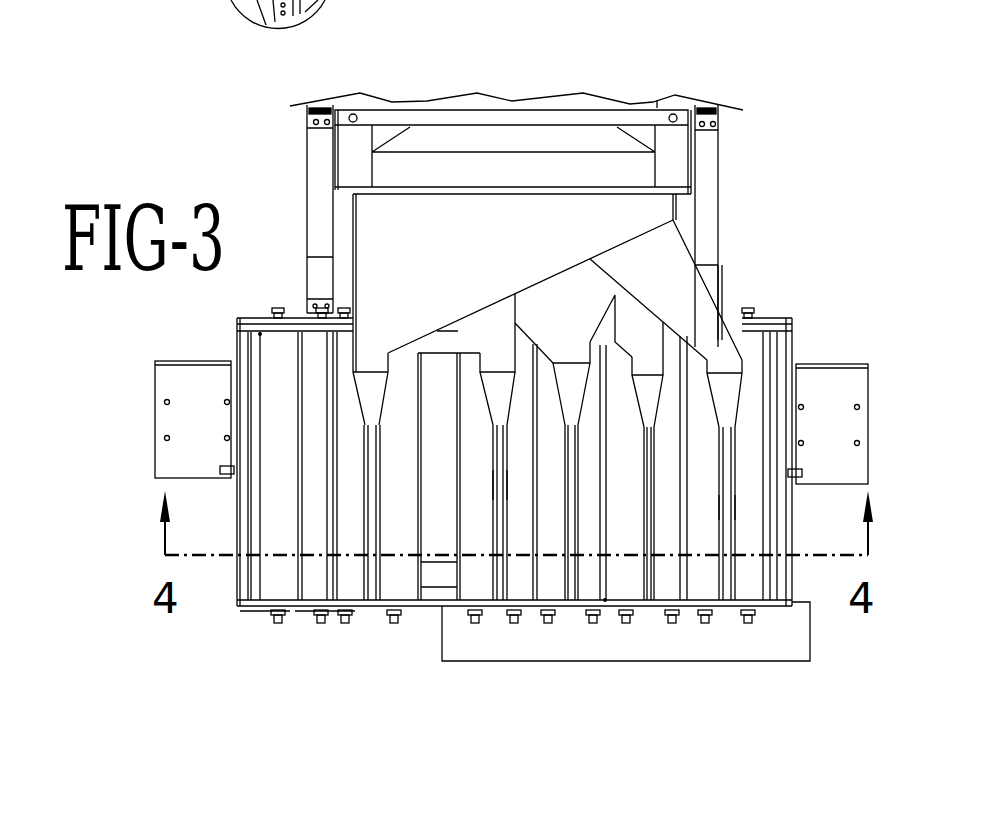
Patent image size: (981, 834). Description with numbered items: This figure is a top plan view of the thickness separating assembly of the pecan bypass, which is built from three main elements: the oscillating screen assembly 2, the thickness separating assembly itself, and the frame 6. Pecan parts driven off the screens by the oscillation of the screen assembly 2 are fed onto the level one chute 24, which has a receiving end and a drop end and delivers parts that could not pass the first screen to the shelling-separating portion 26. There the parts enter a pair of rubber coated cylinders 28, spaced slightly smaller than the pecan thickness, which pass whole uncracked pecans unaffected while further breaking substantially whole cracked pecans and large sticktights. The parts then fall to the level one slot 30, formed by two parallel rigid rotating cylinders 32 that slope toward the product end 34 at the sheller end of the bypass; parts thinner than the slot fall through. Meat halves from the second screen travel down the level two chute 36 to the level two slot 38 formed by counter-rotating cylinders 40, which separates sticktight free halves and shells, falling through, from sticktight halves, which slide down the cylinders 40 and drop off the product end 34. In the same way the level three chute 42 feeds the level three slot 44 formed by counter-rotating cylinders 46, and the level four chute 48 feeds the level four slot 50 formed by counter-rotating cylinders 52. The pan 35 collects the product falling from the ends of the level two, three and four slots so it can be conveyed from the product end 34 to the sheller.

The screen assembly 2 is at (618, 78).
The frame 6 is at (828, 345).
The level one chute 24 is at (364, 373).
The shelling-separating portion 26 is at (360, 643).
The rubber coated cylinders 28 is at (357, 479).
The level one slot 30 is at (301, 453).
The rotating cylinders 32 is at (277, 393).
The product end 34 is at (198, 622).
The pan 35 is at (730, 673).
The level two chute 36 is at (497, 392).
The level two slot 38 is at (497, 485).
The counter-rotating cylinders 40 is at (487, 487).
The level three chute 42 is at (572, 392).
The level three slot 44 is at (577, 483).
The counter-rotating cylinders 46 is at (572, 497).
The level four chute 48 is at (642, 397).
The level four slot 50 is at (650, 484).
The counter-rotating cylinders 52 is at (676, 457).